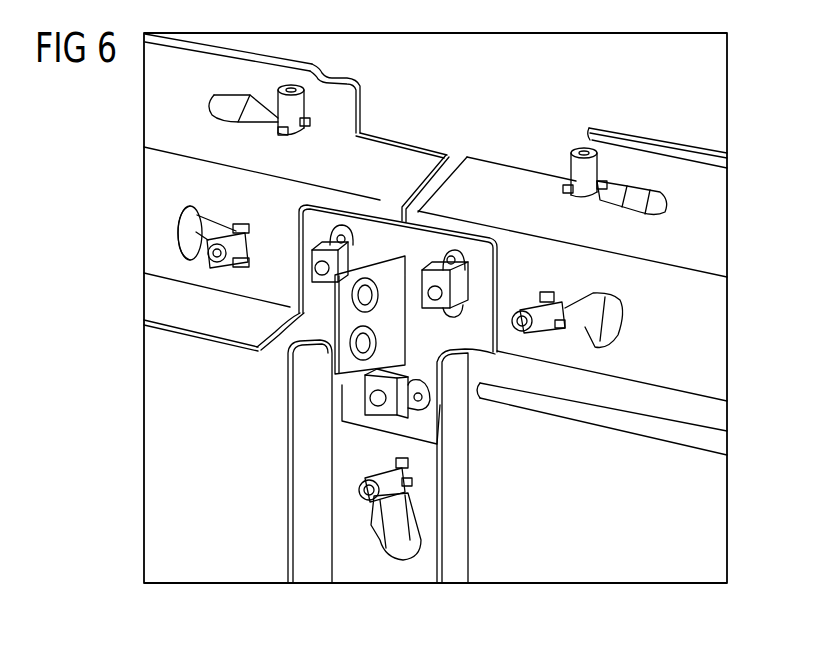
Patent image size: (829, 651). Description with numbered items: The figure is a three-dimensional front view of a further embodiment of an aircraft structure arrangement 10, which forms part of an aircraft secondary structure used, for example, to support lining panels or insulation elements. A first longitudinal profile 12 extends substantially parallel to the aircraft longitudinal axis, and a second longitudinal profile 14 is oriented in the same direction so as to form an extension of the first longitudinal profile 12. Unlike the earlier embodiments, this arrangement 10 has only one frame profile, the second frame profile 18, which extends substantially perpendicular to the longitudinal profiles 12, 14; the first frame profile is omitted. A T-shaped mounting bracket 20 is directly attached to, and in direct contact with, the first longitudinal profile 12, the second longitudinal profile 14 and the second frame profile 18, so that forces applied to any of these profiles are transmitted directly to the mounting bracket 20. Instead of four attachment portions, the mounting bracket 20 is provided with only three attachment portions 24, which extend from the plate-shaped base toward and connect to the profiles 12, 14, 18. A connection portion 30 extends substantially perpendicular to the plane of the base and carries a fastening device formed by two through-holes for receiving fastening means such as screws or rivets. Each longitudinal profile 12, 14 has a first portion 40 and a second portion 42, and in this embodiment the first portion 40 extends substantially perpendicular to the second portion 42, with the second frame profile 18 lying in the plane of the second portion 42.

The aircraft structure arrangement 10 is at (740, 71).
The first longitudinal profile 12 is at (333, 98).
The second longitudinal profile 14 is at (631, 142).
The second frame profile 18 is at (456, 512).
The mounting bracket 20 is at (386, 212).
The attachment portions 24 is at (303, 218).
The connection portion 30 is at (387, 332).
The first portion 40 is at (257, 82).
The second portion 42 is at (220, 278).